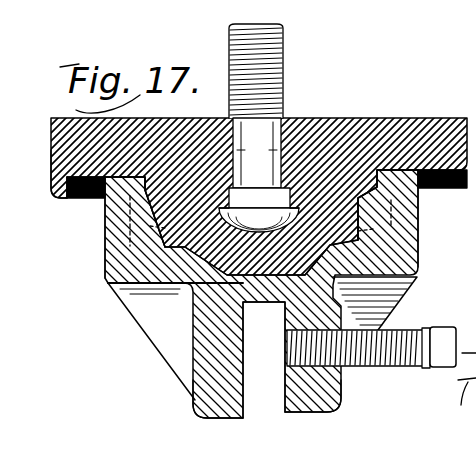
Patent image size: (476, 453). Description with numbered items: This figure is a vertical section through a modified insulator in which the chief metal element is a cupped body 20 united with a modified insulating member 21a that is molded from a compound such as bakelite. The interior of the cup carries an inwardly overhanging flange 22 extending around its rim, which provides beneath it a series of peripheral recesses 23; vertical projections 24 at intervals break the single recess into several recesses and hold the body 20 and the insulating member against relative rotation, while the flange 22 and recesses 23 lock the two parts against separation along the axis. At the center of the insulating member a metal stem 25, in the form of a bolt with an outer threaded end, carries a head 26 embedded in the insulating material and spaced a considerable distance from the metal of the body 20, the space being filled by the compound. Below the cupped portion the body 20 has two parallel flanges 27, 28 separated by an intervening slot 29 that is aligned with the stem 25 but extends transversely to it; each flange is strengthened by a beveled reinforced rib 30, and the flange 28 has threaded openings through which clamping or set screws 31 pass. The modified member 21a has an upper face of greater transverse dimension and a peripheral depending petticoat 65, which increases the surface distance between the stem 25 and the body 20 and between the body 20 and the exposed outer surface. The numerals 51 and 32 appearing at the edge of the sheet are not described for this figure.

The modified insulating member 21a is at (51, 120).
The petticoat 65 is at (58, 200).
The overhanging flange 22 is at (132, 187).
The peripheral recesses 23 is at (147, 229).
The projections 24 is at (150, 226).
The cupped body 20 is at (110, 283).
The metal stem 25 is at (283, 101).
The head 26 is at (250, 222).
The flange 27 is at (206, 391).
The flange 28 is at (337, 405).
The slot 29 is at (268, 378).
The beveled reinforced rib 30 is at (170, 345).
The clamping or set screws 31 is at (371, 361).
The adjacent figure numeral 51 is at (465, 63).
The adjacent figure numeral 32 is at (467, 85).